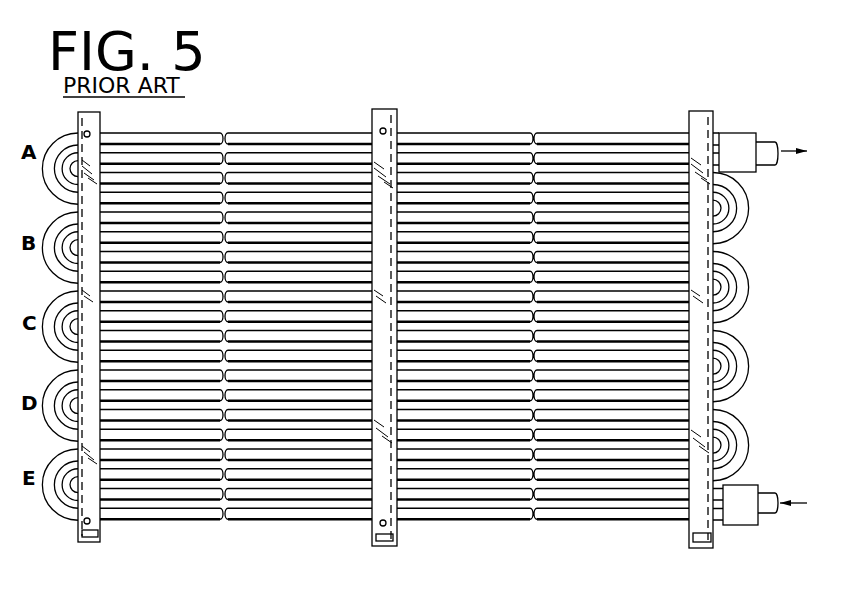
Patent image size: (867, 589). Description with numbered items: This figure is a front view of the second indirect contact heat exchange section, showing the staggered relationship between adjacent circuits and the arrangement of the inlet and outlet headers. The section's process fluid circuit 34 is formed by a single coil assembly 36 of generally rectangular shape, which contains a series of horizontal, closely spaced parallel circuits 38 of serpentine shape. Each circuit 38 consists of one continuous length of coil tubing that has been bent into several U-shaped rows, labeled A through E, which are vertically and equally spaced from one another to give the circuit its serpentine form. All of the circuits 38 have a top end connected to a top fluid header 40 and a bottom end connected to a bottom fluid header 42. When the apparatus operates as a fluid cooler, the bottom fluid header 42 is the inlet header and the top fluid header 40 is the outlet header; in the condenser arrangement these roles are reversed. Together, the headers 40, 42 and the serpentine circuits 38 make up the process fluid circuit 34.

The process fluid circuit 34 is at (335, 117).
The coil assembly 36 is at (394, 299).
The circuits 38 is at (63, 133).
The top fluid header 40 is at (749, 167).
The bottom fluid header 42 is at (752, 520).